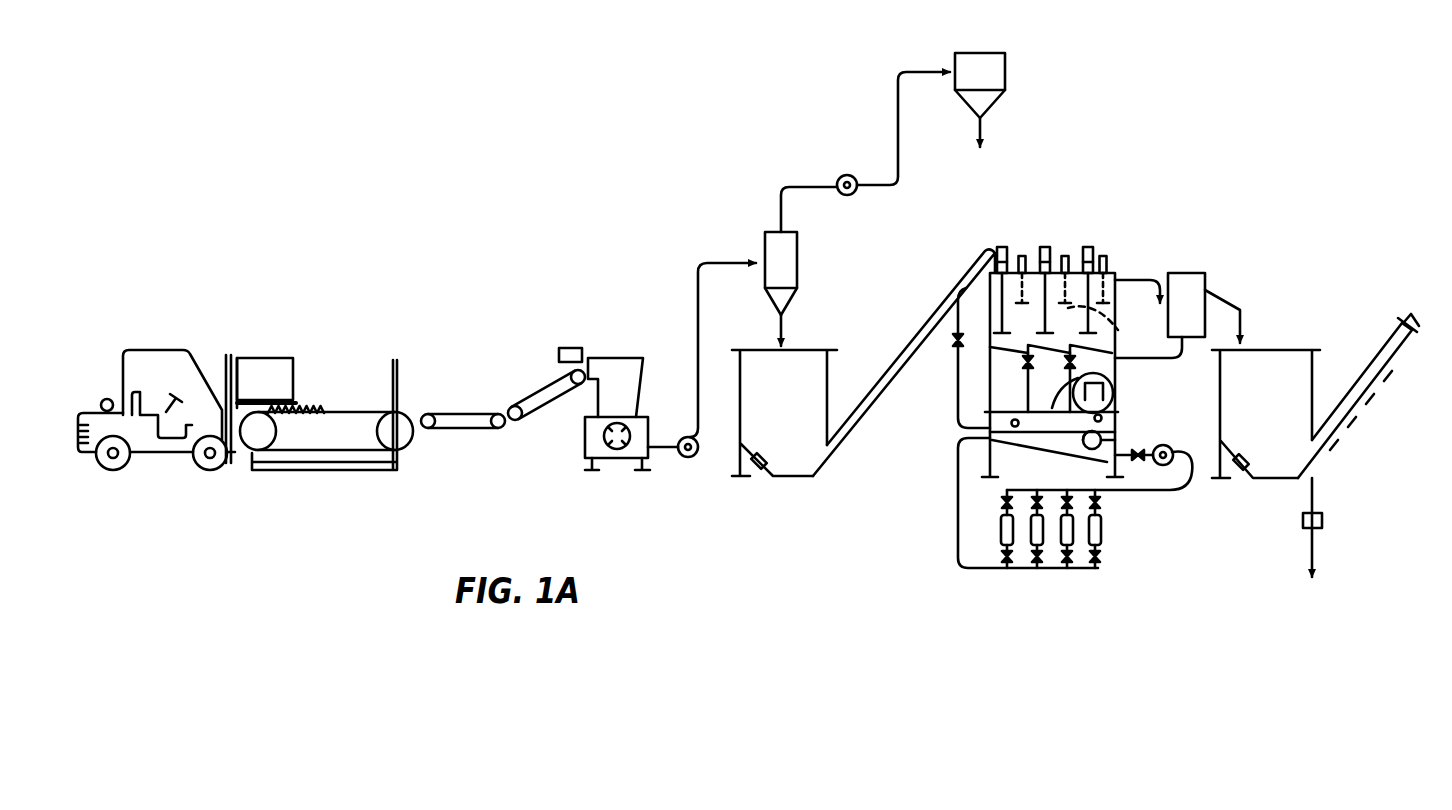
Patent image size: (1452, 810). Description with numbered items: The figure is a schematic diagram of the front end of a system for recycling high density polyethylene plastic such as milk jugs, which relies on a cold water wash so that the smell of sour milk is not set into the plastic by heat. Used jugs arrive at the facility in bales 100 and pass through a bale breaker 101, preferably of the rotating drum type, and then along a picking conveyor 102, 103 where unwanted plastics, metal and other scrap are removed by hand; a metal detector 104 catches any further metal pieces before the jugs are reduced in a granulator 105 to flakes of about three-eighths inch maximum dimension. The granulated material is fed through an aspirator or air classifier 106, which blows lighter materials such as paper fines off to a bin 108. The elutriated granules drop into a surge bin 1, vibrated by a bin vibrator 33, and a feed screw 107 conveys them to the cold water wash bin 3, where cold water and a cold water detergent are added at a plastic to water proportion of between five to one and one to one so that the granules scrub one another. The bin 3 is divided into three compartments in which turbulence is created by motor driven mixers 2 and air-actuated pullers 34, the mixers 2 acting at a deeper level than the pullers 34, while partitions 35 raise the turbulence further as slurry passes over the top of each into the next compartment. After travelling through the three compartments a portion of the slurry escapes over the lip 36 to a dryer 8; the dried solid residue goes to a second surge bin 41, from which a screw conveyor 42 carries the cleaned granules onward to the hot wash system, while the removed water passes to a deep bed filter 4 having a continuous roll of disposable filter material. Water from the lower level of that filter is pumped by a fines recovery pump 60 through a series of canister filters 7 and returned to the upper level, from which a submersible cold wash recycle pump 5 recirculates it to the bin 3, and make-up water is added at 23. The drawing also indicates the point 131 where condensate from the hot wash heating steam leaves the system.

The surge bin 1 is at (789, 420).
The motor driven mixers 2 is at (1000, 245).
The cold water wash bin 3 is at (988, 360).
The deep bed filter 4 is at (1116, 381).
The submersible cold wash recycle pump 5 is at (1082, 442).
The canister filters 7 is at (1103, 530).
The dryer 8 is at (1212, 272).
The make-up water addition point 23 is at (1122, 410).
The bin vibrator 33 is at (761, 470).
The air-actuated pullers 34 is at (1022, 255).
The partitions 35 is at (1120, 330).
The lip 36 is at (1125, 278).
The surge bin 41 is at (1258, 408).
The screw conveyor 42 is at (1373, 385).
The fines recovery pump 60 is at (1185, 466).
The bales 100 is at (274, 358).
The bale breaker 101 is at (330, 408).
The picking conveyor 102 is at (462, 408).
The picking conveyor 103 is at (544, 388).
The metal detector 104 is at (579, 344).
The granulator 105 is at (625, 370).
The aspirator or air classifier 106 is at (762, 232).
The feed screw 107 is at (910, 328).
The bin 108 is at (1011, 63).
The condensate outlet 131 is at (1308, 543).